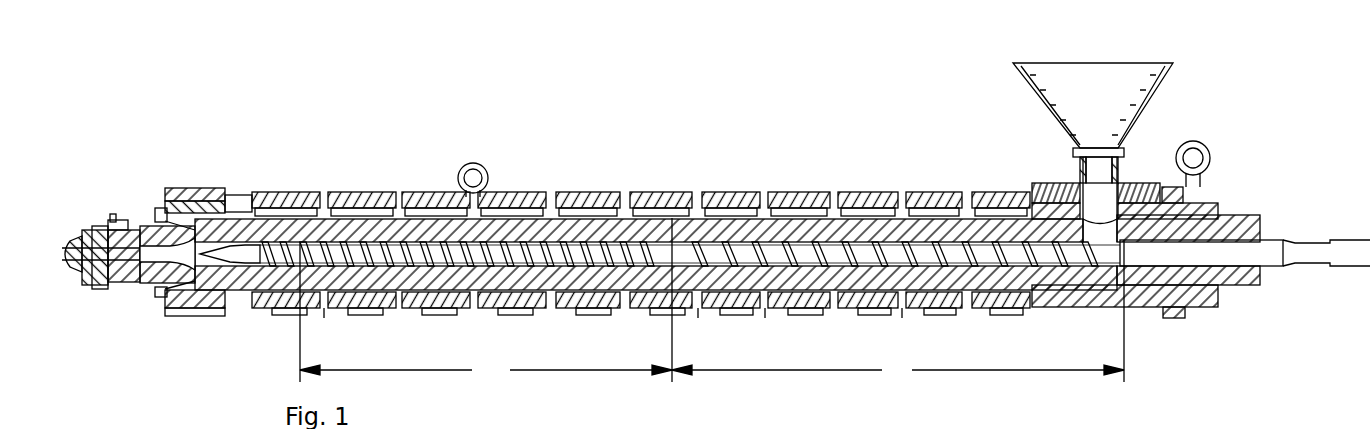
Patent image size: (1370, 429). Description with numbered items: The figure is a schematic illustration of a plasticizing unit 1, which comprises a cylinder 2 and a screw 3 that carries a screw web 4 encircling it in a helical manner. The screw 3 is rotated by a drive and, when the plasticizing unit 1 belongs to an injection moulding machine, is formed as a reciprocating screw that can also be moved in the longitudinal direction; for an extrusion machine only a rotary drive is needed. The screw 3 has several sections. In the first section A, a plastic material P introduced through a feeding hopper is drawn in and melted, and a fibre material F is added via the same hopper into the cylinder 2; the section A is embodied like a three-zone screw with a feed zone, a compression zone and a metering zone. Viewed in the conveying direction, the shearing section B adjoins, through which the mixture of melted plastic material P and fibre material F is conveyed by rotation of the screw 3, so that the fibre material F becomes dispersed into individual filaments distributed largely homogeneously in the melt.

The plasticizing unit 1 is at (716, 173).
The cylinder 2 is at (531, 227).
The screw 3 is at (936, 241).
The screw web 4 is at (850, 241).
The fibre material F is at (1086, 115).
The plastic material P is at (1114, 124).
The first section A is at (898, 311).
The shearing section B is at (486, 300).